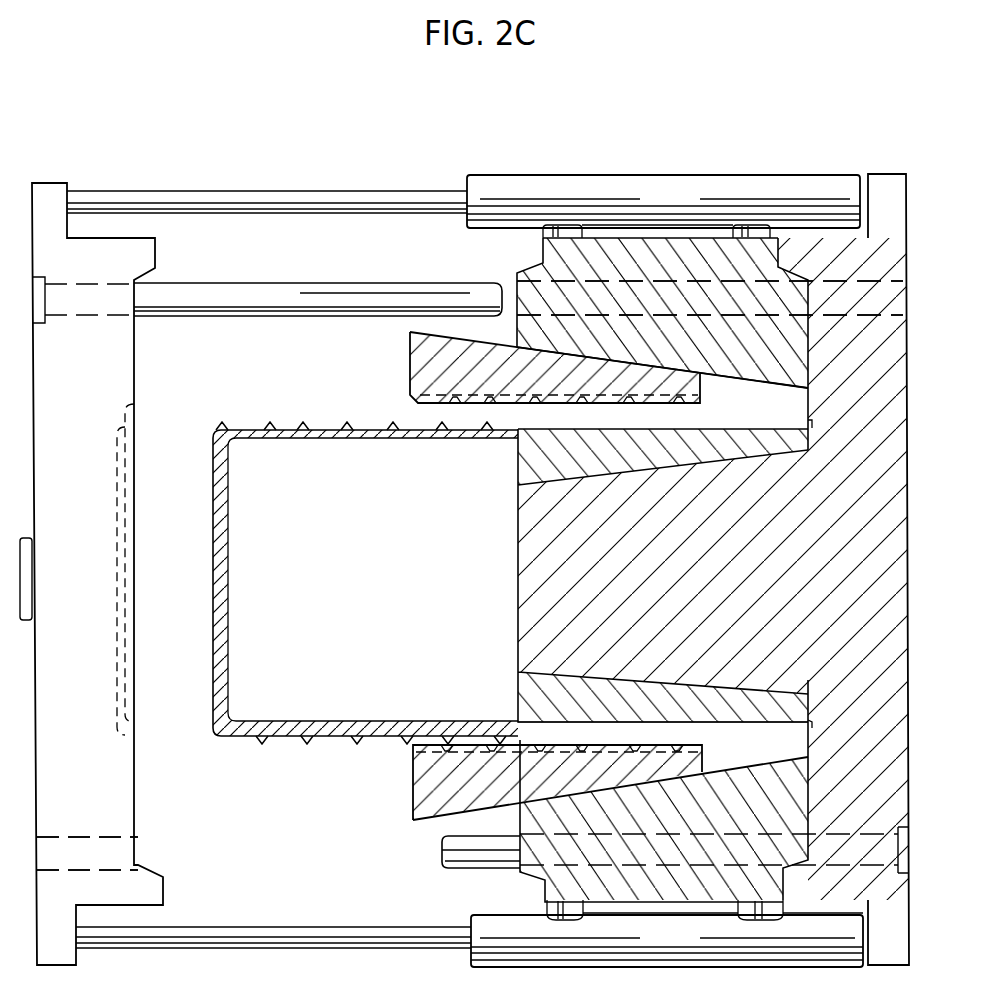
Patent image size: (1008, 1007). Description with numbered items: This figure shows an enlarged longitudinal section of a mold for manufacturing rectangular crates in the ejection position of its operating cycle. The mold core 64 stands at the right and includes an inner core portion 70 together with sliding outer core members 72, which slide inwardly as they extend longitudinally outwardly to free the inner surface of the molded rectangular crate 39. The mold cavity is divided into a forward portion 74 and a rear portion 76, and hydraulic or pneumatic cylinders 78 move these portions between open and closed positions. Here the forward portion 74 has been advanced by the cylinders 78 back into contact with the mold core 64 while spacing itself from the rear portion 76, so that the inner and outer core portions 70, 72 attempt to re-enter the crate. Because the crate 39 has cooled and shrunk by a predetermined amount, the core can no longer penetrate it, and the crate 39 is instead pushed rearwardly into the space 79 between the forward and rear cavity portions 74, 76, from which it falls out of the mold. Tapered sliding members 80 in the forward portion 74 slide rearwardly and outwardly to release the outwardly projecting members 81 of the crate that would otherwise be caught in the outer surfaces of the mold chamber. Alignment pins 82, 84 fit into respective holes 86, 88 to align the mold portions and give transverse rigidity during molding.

The core member 64 is at (887, 173).
The hydraulic or pneumatic cylinders 78 is at (678, 213).
The hole 86 is at (657, 289).
The alignment pin 82 is at (305, 292).
The tapered sliding members 80 is at (410, 358).
The forward portion 74 is at (768, 356).
The rear portion 76 is at (96, 409).
The outwardly projecting members 81 is at (394, 429).
The sliding outer core members 72 is at (735, 452).
The inner core portion 70 is at (731, 572).
The rectangular crate 39 is at (333, 724).
The hole 88 is at (125, 853).
The space 79 is at (293, 849).
The alignment pin 84 is at (460, 868).